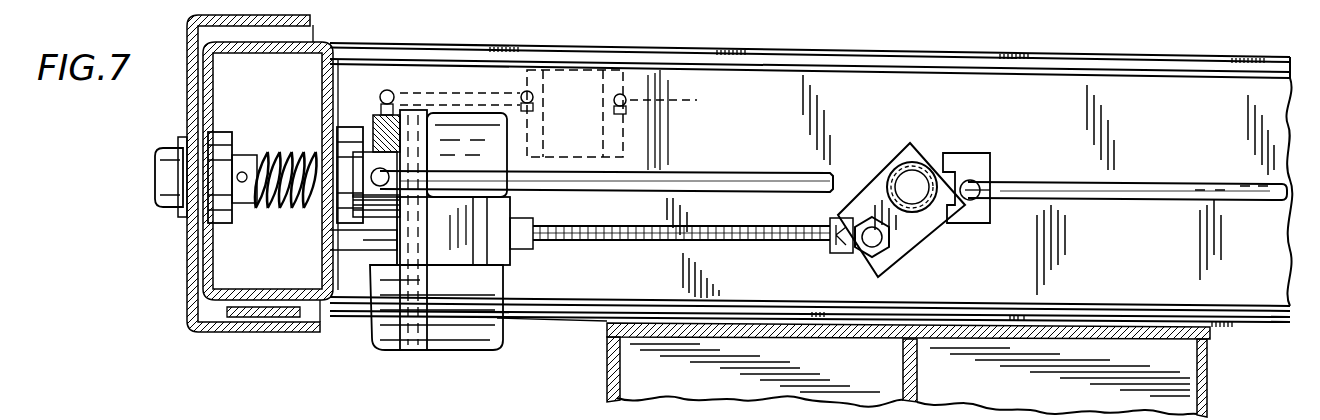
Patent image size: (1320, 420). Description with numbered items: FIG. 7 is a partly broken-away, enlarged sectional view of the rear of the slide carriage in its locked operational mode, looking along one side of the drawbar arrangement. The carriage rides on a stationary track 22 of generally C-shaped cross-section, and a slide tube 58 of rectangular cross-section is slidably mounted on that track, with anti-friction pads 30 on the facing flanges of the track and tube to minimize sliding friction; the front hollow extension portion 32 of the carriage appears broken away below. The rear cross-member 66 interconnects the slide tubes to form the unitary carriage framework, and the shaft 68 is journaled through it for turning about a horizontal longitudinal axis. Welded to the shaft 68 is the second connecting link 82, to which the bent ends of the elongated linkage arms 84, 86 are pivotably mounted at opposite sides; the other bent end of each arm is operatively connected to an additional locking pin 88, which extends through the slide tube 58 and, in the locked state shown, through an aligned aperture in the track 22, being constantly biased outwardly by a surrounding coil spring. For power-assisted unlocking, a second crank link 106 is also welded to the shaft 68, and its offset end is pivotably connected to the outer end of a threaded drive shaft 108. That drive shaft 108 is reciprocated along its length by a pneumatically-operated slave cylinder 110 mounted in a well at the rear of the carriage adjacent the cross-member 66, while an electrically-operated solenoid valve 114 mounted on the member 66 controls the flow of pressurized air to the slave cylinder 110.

The track 22 is at (200, 19).
The anti-friction pad 30 is at (310, 25).
The front hollow extension portion 32 is at (608, 374).
The slide tube 58 is at (333, 78).
The rear cross-member 66 is at (735, 68).
The shaft 68 is at (905, 158).
The second connecting link 82 is at (982, 160).
The linkage arm 84 is at (752, 176).
The linkage arm 86 is at (1182, 182).
The additional locking pin 88 is at (172, 150).
The second crank link 106 is at (908, 240).
The threaded drive shaft 108 is at (733, 248).
The slave cylinder 110 is at (505, 280).
The solenoid valve 114 is at (560, 38).